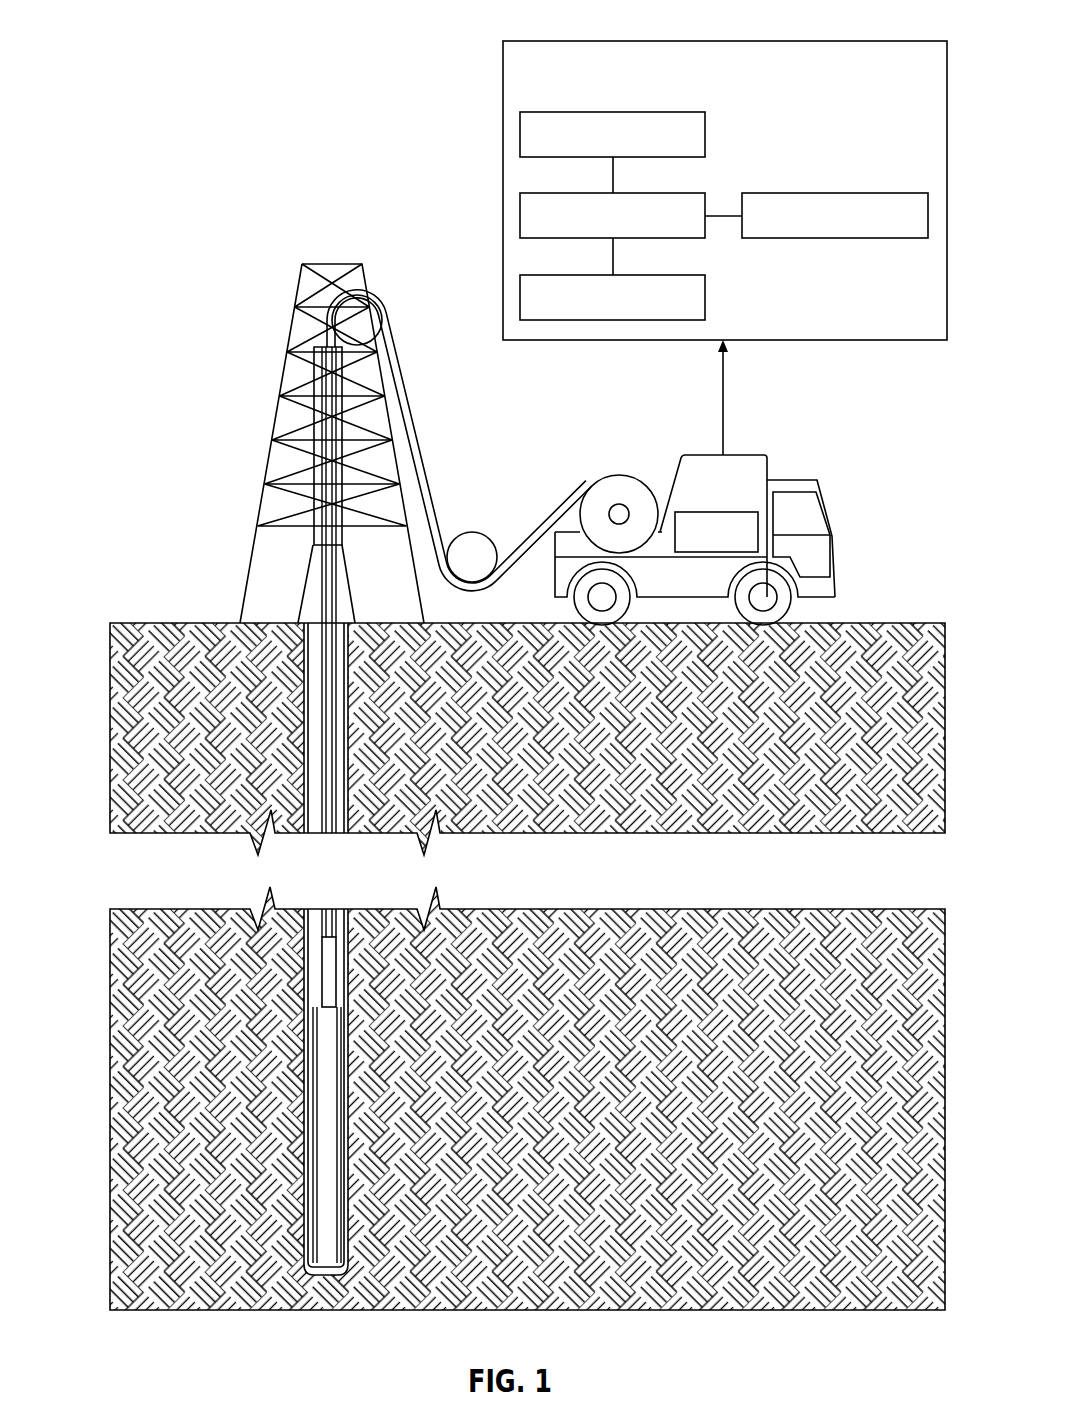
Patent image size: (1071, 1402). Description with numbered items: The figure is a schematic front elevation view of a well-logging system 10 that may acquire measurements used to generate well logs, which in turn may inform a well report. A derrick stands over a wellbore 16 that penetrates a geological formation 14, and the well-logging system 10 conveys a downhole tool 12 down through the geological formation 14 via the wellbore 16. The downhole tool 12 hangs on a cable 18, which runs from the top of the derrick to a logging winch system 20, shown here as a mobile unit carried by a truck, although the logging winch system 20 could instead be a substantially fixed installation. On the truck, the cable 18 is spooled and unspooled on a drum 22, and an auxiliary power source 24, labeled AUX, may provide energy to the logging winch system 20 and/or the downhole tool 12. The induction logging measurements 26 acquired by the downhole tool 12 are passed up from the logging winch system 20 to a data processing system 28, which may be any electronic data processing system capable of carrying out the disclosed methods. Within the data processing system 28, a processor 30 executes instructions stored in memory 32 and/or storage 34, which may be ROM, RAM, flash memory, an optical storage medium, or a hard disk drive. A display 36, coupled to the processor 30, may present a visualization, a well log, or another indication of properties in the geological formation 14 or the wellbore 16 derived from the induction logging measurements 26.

The well-logging system 10 is at (265, 340).
The downhole tool 12 is at (316, 940).
The geological formation 14 is at (120, 1076).
The wellbore 16 is at (296, 638).
The cable 18 is at (434, 433).
The logging winch system 20 is at (703, 446).
The drum 22 is at (612, 474).
The auxiliary power source 24 is at (693, 512).
The induction logging measurements 26 is at (726, 398).
The data processing system 28 is at (893, 40).
The processor 30 is at (653, 192).
The memory 32 is at (653, 110).
The storage 34 is at (653, 275).
The display 36 is at (875, 192).